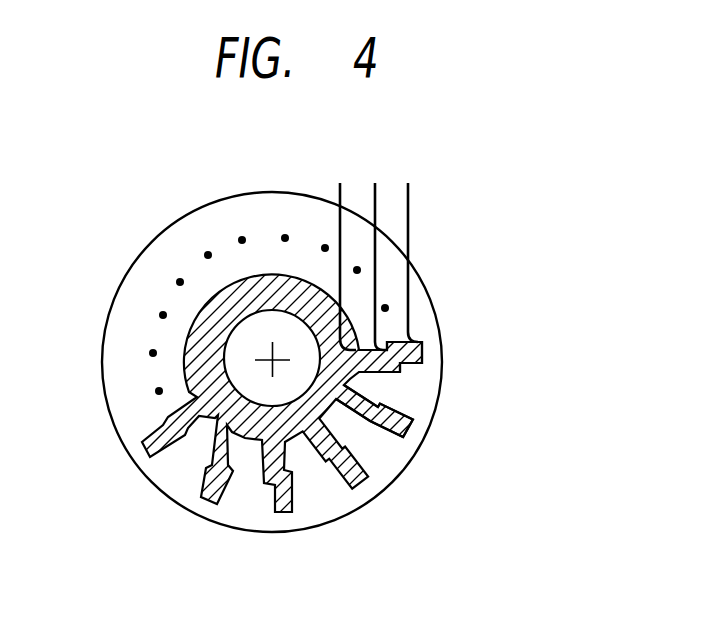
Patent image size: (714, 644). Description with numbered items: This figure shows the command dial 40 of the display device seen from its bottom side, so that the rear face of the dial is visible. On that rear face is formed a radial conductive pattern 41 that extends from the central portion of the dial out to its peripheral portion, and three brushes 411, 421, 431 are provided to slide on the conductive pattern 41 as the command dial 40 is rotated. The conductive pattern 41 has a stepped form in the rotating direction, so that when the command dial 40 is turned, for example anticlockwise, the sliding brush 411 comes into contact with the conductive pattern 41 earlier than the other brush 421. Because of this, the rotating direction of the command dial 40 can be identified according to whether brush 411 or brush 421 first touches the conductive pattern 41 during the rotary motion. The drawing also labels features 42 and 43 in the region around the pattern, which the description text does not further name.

The command dial 40 is at (150, 502).
The conductive pattern 41 is at (408, 430).
The stem base 42 is at (428, 388).
The bracket block 43 is at (437, 333).
The brush 431 is at (337, 192).
The brush 421 is at (380, 198).
The brush 411 is at (414, 206).